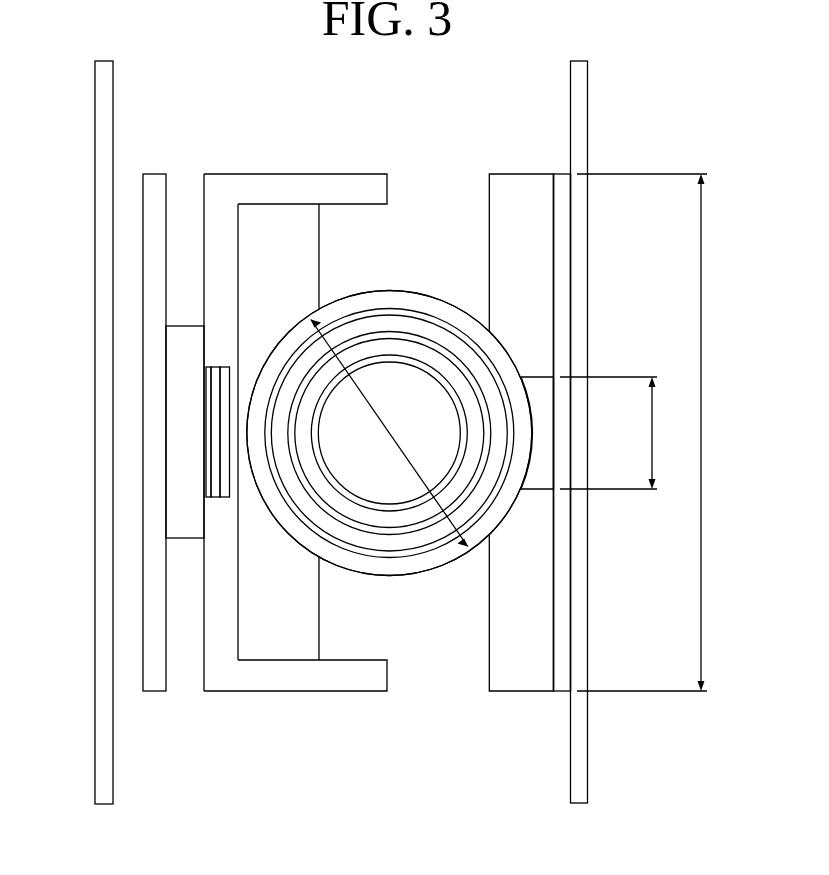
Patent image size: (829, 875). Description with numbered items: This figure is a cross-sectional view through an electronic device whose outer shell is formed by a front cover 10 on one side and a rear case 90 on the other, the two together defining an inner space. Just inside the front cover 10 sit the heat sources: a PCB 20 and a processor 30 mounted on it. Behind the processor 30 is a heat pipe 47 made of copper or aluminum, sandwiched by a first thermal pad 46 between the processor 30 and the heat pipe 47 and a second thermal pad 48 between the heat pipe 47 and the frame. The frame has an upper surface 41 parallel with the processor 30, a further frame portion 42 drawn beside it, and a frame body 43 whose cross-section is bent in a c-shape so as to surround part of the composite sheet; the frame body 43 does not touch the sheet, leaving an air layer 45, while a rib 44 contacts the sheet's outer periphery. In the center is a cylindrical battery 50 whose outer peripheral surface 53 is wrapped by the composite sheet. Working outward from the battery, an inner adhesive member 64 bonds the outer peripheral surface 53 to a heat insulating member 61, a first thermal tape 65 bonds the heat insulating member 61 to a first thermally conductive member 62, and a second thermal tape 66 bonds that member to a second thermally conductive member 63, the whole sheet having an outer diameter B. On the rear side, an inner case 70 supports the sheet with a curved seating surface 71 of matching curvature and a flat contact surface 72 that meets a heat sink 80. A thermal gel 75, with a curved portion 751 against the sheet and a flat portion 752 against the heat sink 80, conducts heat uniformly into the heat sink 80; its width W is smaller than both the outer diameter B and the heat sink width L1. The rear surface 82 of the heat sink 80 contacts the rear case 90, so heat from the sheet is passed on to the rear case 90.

The front cover 10 is at (100, 608).
The PCB 20 is at (150, 545).
The processor 30 is at (175, 473).
The upper surface of the frame 41 is at (203, 678).
The second plate portion of bracket 42 is at (238, 638).
The frame body 43 is at (362, 683).
The rib 44 is at (260, 225).
The air layer 45 is at (298, 236).
The first thermal pad 46 is at (208, 428).
The heat pipe 47 is at (217, 400).
The second thermal pad 48 is at (227, 377).
The cylindrical battery 50 is at (440, 419).
The outer peripheral surface 53 is at (352, 488).
The heat insulating member 61 is at (402, 345).
The first thermally conductive member 62 is at (427, 328).
The second thermally conductive member 63 is at (468, 318).
The inner adhesive member 64 is at (397, 507).
The first thermal tape 65 is at (418, 528).
The second thermal tape 66 is at (448, 543).
The inner case 70 is at (512, 687).
The seating surface 71 is at (505, 517).
The contact surface 72 is at (553, 653).
The thermal gel 75 is at (537, 382).
The curved portion 751 is at (521, 403).
The flat portion 752 is at (554, 393).
The heat sink 80 is at (560, 688).
The rear surface of the heat sink 82 is at (572, 217).
The rear case 90 is at (580, 803).
The outer diameter of the composite sheet B is at (362, 382).
The width of the thermal gel W is at (618, 433).
The width of the heat sink L1 is at (652, 432).